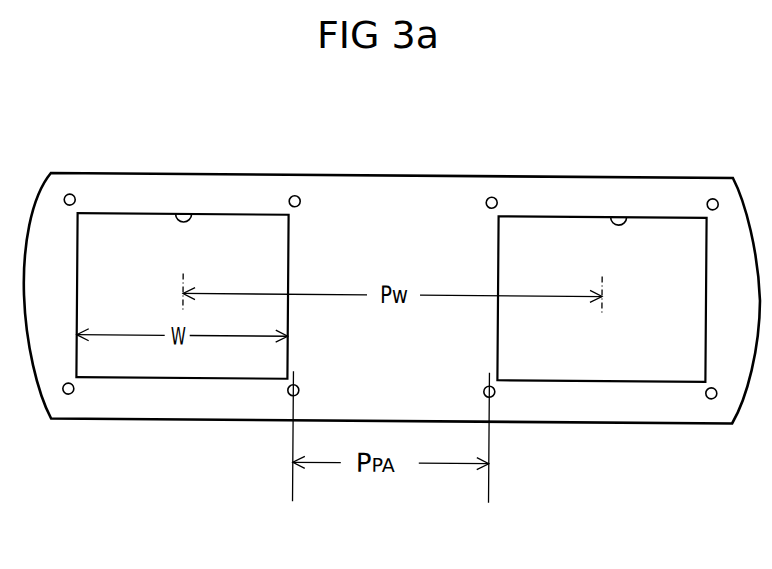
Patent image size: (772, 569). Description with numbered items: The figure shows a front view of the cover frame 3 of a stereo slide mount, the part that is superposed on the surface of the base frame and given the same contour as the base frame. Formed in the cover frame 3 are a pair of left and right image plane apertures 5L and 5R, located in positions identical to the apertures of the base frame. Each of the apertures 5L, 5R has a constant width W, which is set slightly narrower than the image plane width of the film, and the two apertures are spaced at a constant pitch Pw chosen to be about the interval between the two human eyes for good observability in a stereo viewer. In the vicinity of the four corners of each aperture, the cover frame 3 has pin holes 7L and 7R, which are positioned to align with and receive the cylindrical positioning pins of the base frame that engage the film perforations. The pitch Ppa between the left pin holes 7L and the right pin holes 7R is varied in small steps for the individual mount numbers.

The cover frame 3 is at (373, 154).
The left aperture 5L is at (178, 213).
The right aperture 5R is at (614, 213).
The left pin holes 7L is at (70, 196).
The right pin holes 7R is at (490, 196).